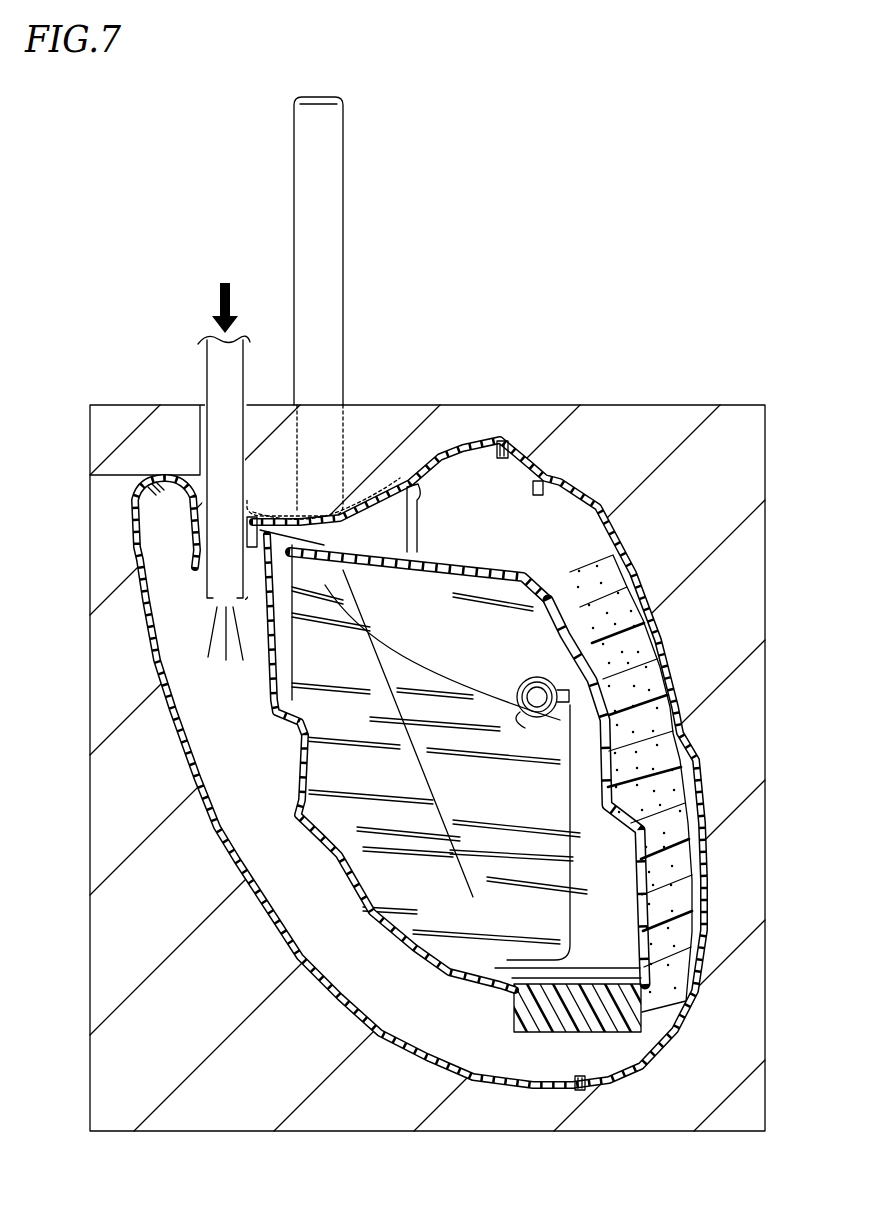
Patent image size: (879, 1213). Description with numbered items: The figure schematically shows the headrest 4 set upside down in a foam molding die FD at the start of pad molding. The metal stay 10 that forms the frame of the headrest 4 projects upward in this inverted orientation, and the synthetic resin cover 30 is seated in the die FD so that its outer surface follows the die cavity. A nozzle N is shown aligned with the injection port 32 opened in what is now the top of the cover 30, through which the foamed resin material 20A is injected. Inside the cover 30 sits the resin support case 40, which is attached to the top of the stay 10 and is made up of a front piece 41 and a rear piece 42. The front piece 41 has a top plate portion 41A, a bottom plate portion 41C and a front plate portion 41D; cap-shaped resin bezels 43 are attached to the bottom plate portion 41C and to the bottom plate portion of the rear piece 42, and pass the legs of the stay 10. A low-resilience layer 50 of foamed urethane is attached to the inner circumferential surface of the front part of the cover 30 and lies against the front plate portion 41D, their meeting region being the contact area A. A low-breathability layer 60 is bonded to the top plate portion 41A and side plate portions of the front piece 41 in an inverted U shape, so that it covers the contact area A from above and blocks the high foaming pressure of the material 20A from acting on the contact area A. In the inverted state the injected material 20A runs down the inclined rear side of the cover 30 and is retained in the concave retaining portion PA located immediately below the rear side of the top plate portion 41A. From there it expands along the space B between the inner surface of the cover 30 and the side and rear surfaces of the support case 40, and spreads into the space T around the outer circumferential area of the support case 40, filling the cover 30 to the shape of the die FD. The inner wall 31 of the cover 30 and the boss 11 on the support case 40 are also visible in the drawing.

The headrest 4 is at (489, 243).
The stay 10 is at (346, 322).
The nozzle N is at (215, 372).
The foam molding die FD is at (137, 445).
The foamed resin material 20A is at (213, 655).
The cover 30 is at (437, 1072).
The housing inner wall 31 is at (485, 1082).
The injection port 32 is at (222, 543).
The bezel 43 is at (392, 485).
The support case 40 is at (502, 807).
The front piece 41 is at (509, 807).
The top plate portion 41A is at (594, 986).
The bottom plate portion 41C is at (457, 568).
The front plate portion 41D is at (641, 860).
The rear piece 42 is at (364, 926).
The low-resilience layer 50 is at (669, 880).
The low-breathability layer 60 is at (646, 1026).
The pivot boss 11 is at (515, 680).
The space T is at (560, 610).
The contact area A is at (681, 805).
The space B is at (262, 833).
The retaining portion PA is at (614, 1053).